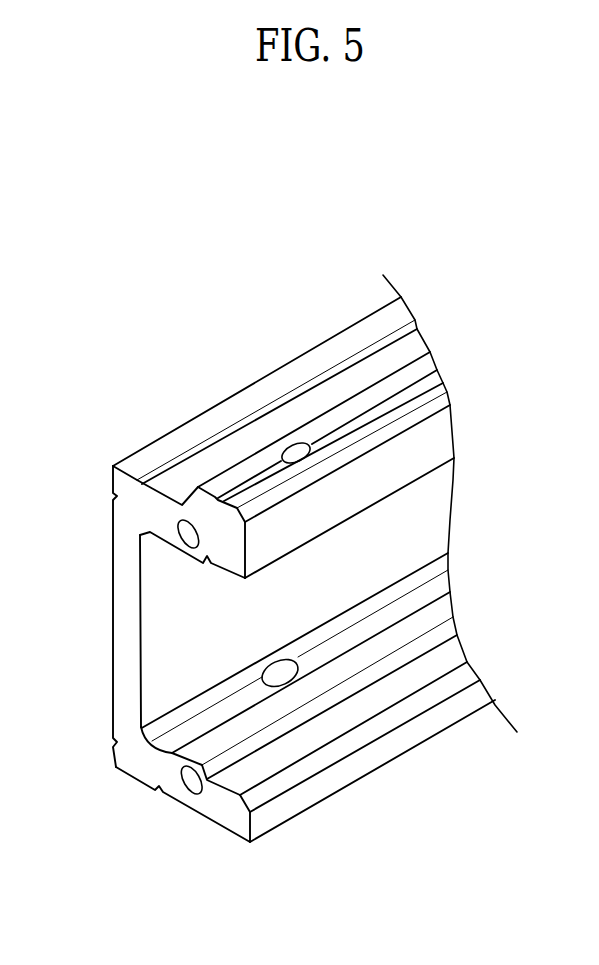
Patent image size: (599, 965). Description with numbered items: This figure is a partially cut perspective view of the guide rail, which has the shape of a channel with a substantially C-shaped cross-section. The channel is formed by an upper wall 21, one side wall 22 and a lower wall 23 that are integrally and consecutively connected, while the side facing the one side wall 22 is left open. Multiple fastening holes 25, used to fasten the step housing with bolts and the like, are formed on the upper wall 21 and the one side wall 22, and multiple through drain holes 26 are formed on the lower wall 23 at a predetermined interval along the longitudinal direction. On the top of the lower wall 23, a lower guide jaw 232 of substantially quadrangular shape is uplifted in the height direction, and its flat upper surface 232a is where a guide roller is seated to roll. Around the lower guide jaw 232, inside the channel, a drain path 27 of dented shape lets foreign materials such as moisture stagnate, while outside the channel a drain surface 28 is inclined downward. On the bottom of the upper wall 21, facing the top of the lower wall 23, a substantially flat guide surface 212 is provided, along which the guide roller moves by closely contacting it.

The upper wall 21 is at (249, 418).
The one side wall 22 is at (110, 634).
The lower wall 23 is at (266, 728).
The fastening holes 25 is at (188, 537).
The through drain holes 26 is at (281, 673).
The drain path 27 is at (200, 723).
The drain surface 28 is at (310, 733).
The guide surface 212 is at (181, 561).
The lower guide jaw 232 is at (216, 767).
The flat upper surface 232a is at (243, 722).